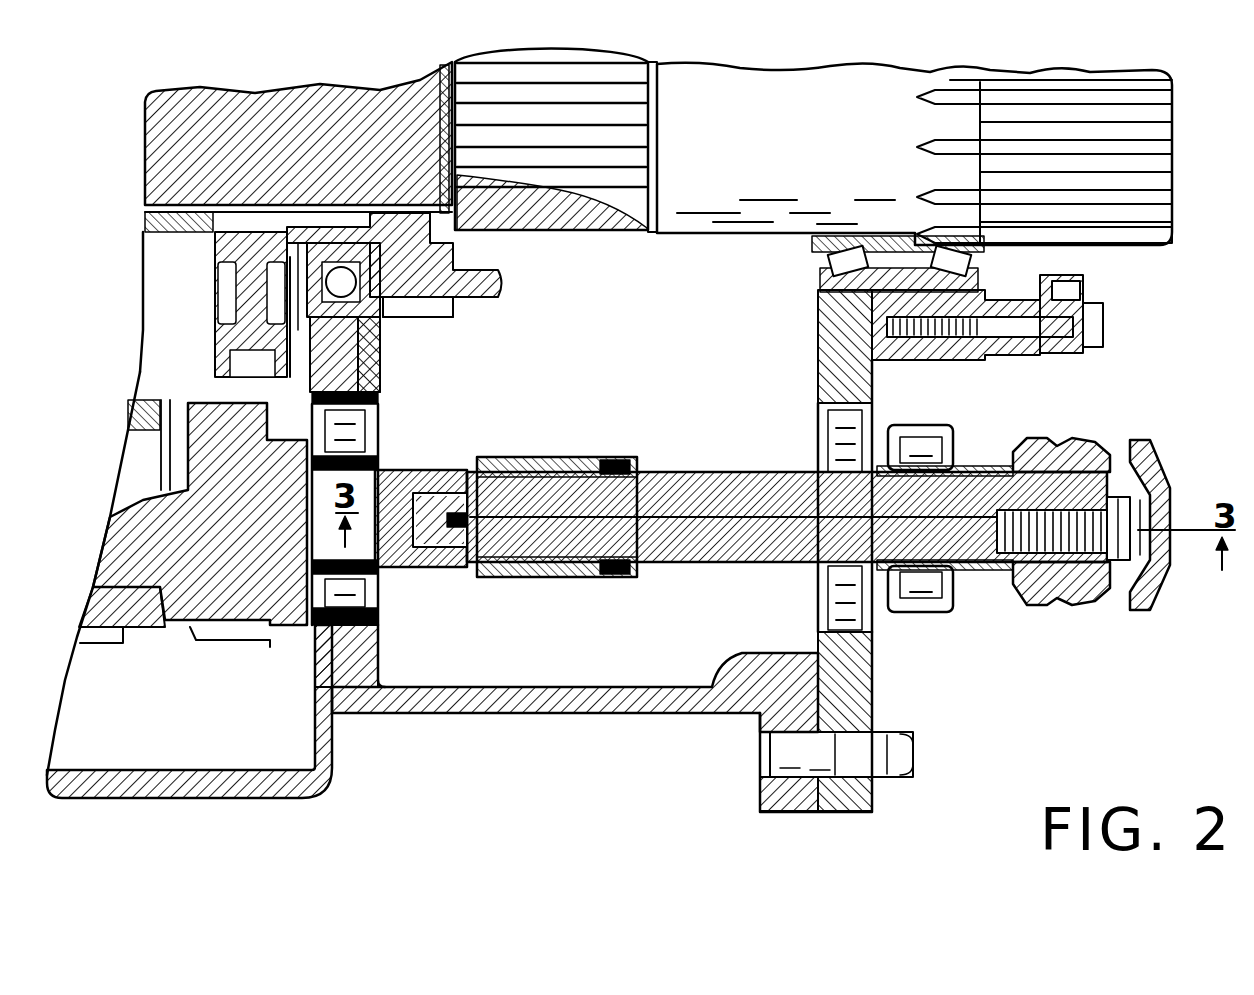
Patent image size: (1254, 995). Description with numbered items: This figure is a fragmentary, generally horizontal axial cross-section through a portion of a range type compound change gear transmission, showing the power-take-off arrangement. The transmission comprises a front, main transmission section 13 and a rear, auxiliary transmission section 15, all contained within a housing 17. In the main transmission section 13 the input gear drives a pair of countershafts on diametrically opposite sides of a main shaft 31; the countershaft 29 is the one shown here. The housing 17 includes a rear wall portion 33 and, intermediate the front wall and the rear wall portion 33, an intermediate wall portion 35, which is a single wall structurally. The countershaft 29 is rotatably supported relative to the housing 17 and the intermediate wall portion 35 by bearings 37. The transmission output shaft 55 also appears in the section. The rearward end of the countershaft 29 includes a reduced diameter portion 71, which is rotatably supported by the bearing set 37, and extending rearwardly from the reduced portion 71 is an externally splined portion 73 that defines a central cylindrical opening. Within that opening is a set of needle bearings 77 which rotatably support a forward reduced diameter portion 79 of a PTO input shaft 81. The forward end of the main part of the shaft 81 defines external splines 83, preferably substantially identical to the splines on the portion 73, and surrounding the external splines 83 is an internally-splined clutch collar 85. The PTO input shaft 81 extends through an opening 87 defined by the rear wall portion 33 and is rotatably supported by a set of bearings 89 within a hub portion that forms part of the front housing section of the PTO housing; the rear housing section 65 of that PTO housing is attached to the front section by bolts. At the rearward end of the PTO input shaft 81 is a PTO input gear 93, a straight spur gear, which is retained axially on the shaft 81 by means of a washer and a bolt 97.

The main transmission section 13 is at (189, 616).
The auxiliary transmission section 15 is at (555, 716).
The housing 17 is at (228, 800).
The countershaft 29 is at (173, 626).
The main shaft 31 is at (282, 104).
The rear wall portion 33 is at (872, 688).
The intermediate wall portion 35 is at (384, 662).
The bearings 37 is at (380, 440).
The output shaft 55 is at (752, 78).
The rear housing section 65 is at (1153, 480).
The reduced diameter portion 71 is at (332, 542).
The externally splined portion 73 is at (385, 493).
The needle bearings 77 is at (455, 500).
The forward reduced diameter portion 79 is at (445, 565).
The PTO input shaft 81 is at (732, 486).
The external splines 83 is at (580, 556).
The clutch collar 85 is at (562, 566).
The opening 87 is at (850, 607).
The bearings 89 is at (922, 445).
The PTO input gear 93 is at (1055, 594).
The bolt 97 is at (1153, 592).